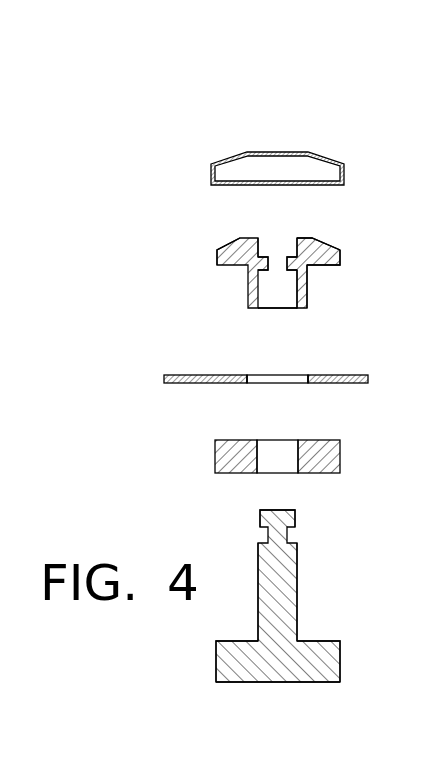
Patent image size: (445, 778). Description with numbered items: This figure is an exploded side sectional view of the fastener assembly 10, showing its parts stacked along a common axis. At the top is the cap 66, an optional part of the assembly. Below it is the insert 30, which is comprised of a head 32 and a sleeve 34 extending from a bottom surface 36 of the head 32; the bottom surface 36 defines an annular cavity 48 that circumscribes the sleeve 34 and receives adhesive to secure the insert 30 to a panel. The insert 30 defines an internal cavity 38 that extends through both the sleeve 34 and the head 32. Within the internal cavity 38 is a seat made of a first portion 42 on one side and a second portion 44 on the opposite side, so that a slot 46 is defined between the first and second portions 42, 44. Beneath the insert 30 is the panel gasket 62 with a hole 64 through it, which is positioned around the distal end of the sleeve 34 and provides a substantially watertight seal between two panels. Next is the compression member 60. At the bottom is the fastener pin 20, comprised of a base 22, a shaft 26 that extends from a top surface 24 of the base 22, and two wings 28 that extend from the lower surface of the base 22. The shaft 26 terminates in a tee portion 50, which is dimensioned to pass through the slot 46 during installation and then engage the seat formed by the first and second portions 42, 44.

The fastener assembly 10 is at (185, 92).
The fastener pin 20 is at (270, 683).
The base 22 is at (215, 643).
The top surface 24 is at (320, 640).
The shaft 26 is at (297, 578).
The wings 28 is at (230, 683).
The insert 30 is at (215, 253).
The head 32 is at (315, 248).
The sleeve 34 is at (307, 297).
The bottom surface 36 is at (337, 268).
The internal cavity 38 is at (294, 276).
The first portion 42 is at (266, 272).
The second portion 44 is at (288, 272).
The slot 46 is at (266, 271).
The annular cavity 48 is at (240, 258).
The tee portion 50 is at (297, 522).
The compression member 60 is at (215, 455).
The panel gasket 62 is at (164, 380).
The hole 64 is at (257, 385).
The cap 66 is at (327, 155).